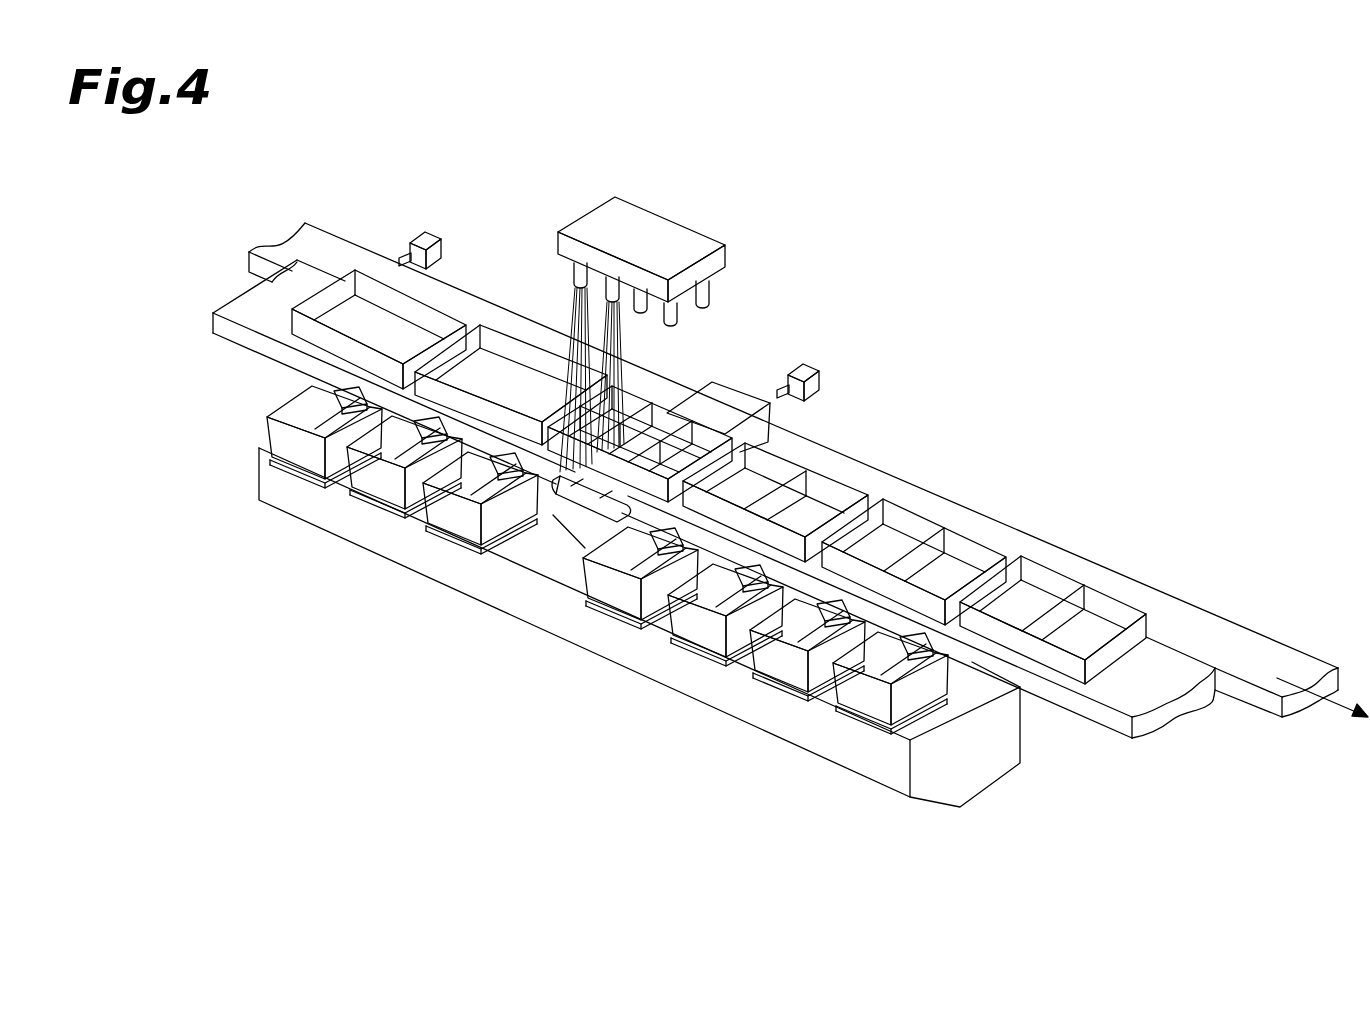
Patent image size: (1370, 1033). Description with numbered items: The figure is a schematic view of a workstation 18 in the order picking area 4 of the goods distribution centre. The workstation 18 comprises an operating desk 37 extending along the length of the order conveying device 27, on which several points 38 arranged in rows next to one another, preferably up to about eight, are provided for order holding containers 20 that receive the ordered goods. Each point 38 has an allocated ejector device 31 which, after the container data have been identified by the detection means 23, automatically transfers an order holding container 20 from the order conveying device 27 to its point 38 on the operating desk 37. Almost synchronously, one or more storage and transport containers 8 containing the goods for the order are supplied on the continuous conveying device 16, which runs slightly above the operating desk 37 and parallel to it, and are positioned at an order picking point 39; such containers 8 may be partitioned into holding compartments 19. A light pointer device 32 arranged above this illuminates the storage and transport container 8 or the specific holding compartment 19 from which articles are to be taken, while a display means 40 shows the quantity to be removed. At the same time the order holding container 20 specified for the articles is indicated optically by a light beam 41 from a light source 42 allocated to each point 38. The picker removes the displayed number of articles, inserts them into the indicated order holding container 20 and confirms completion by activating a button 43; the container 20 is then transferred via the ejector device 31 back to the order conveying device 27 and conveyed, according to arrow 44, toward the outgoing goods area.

The order picking area 4 is at (1011, 258).
The storage and transport container 8 is at (388, 300).
The continuous conveying device 16 is at (265, 312).
The workstation 18 is at (350, 665).
The holding compartment 19 is at (650, 412).
The order holding container 20 is at (736, 404).
The detection means 23 is at (426, 238).
The order conveying device 27 is at (315, 242).
The ejector device 31 is at (310, 474).
The light pointer device 32 is at (655, 232).
The operating desk 37 is at (975, 768).
The point 38 is at (272, 486).
The order picking point 39 is at (672, 378).
The display means 40 is at (552, 499).
The light beam 41 is at (583, 306).
The light source 42 is at (340, 397).
The button 43 is at (585, 548).
The arrow 44 is at (1296, 680).